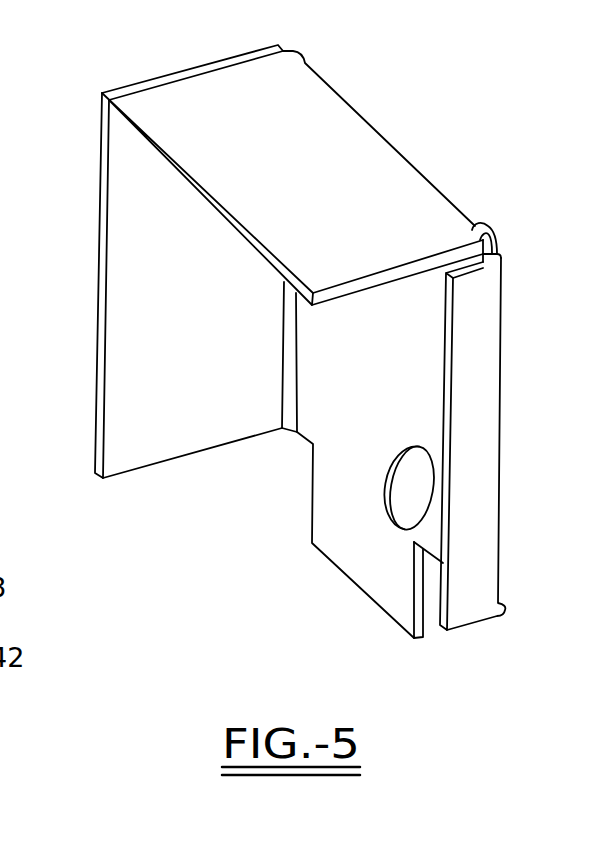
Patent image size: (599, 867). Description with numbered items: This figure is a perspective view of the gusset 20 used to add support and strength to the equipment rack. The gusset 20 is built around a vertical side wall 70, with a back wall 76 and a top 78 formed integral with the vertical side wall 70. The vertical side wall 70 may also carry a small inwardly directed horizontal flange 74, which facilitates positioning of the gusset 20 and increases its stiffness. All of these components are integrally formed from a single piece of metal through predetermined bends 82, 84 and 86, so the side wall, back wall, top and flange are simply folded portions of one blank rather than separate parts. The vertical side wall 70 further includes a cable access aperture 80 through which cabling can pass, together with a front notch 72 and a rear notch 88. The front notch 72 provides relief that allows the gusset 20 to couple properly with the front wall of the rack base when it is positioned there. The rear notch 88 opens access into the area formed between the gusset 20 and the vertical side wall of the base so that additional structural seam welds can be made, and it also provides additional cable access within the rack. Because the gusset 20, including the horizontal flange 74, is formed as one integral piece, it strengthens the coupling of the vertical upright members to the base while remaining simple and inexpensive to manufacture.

The gusset 20 is at (412, 153).
The vertical side wall 70 is at (348, 418).
The front notch 72 is at (417, 608).
The horizontal flange 74 is at (477, 508).
The back wall 76 is at (307, 118).
The top 78 is at (137, 245).
The cable access aperture 80 is at (403, 492).
The bend 82 is at (290, 368).
The bend 84 is at (489, 234).
The bend 86 is at (498, 255).
The rear notch 88 is at (311, 508).